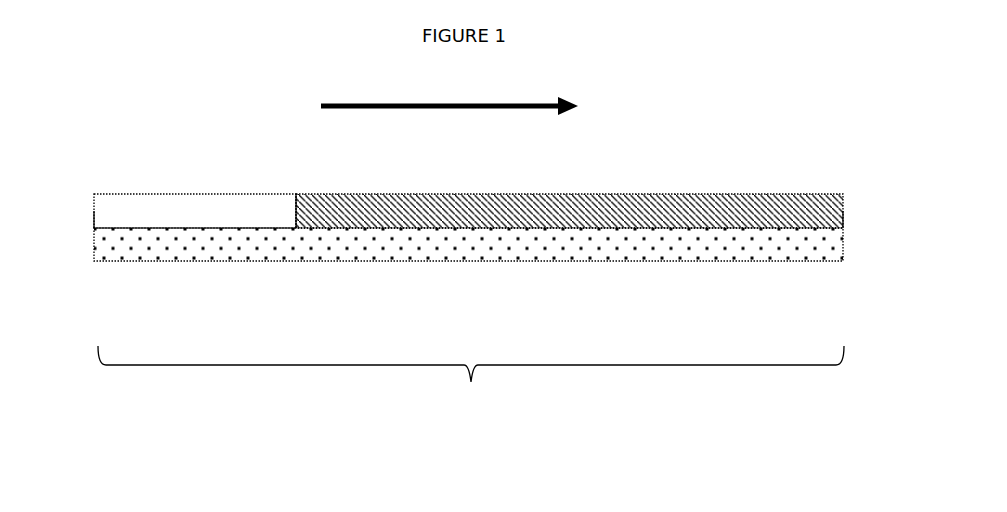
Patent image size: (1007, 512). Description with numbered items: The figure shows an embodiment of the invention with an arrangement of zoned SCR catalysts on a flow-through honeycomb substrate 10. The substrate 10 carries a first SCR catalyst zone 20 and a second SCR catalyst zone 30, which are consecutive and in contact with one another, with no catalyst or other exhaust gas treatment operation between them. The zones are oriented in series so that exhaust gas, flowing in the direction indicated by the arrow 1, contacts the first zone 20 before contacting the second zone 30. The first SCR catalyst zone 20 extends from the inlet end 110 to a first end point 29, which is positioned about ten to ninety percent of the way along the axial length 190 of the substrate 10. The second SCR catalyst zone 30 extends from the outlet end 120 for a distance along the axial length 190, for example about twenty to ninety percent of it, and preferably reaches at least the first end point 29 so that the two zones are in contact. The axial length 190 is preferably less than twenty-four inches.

The exhaust gas flow direction 1 is at (362, 104).
The flow-through honeycomb substrate 10 is at (392, 236).
The first SCR catalyst zone 20 is at (243, 212).
The first end point 29 is at (295, 195).
The second SCR catalyst zone 30 is at (660, 212).
The inlet end 110 is at (93, 211).
The outlet end 120 is at (843, 226).
The axial length 190 is at (471, 381).